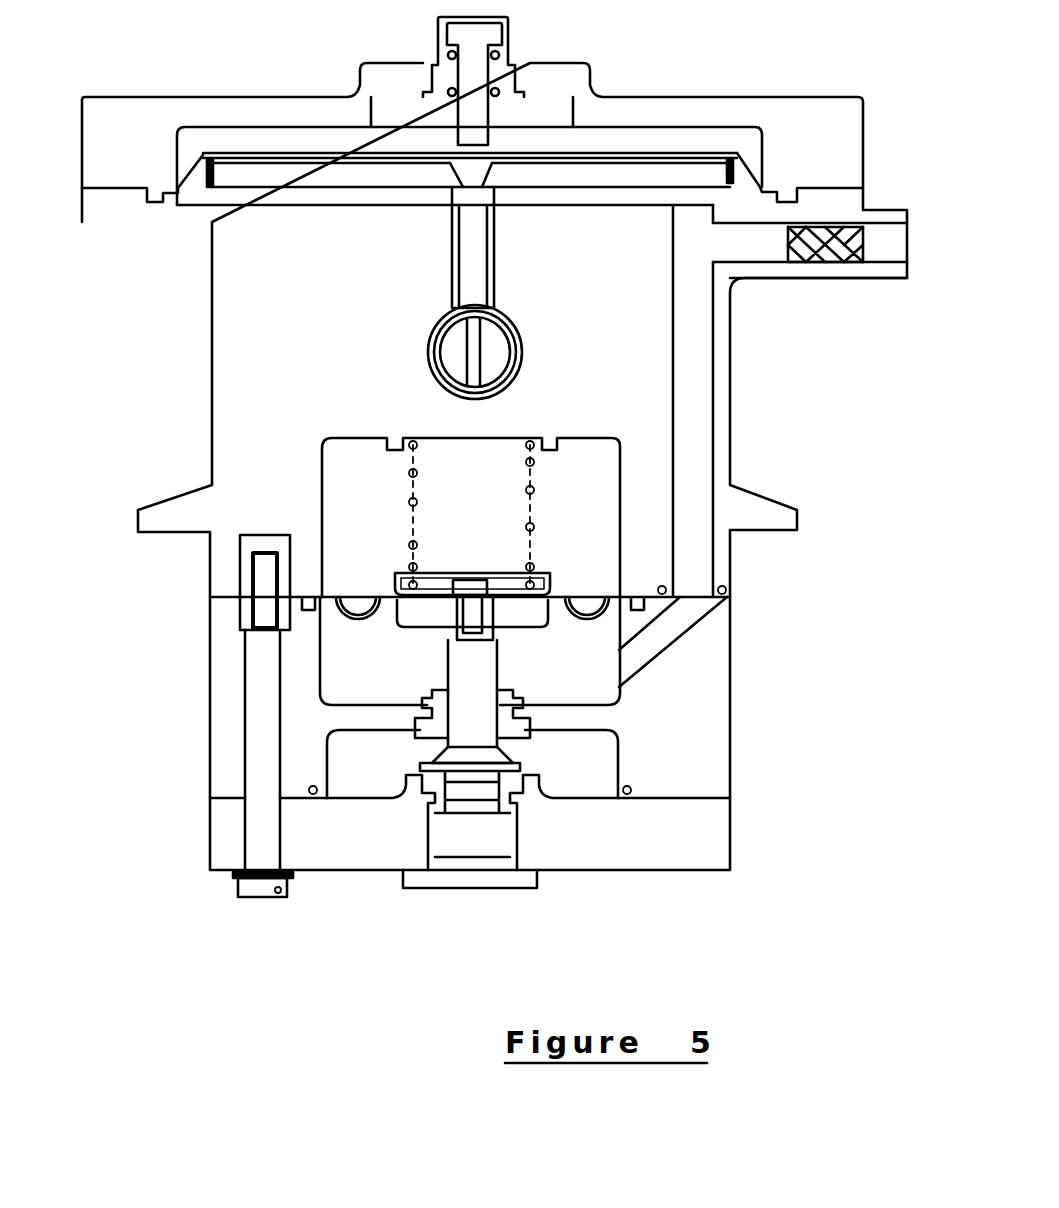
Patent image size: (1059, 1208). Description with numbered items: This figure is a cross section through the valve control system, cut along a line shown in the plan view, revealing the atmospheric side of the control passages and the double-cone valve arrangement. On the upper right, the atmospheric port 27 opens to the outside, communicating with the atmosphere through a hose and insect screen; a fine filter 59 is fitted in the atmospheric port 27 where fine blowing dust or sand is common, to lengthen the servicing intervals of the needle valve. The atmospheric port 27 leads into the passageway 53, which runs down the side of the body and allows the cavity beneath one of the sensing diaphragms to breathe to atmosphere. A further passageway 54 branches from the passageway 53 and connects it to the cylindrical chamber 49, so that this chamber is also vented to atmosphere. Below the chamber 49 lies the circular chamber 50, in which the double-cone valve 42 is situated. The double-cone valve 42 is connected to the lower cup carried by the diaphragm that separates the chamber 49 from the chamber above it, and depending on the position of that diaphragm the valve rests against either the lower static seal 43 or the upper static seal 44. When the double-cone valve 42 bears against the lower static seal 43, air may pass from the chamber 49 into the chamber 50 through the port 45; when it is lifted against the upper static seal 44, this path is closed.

The atmospheric port 27 is at (883, 280).
The fine filter 59 is at (752, 247).
The passageway 53 is at (692, 368).
The passageway 54 is at (665, 622).
The cylindrical chamber 49 is at (350, 663).
The circular chamber 50 is at (360, 760).
The upper static seal 44 is at (437, 697).
The port 45 is at (500, 690).
The double-cone valve 42 is at (520, 763).
The lower static seal 43 is at (507, 807).